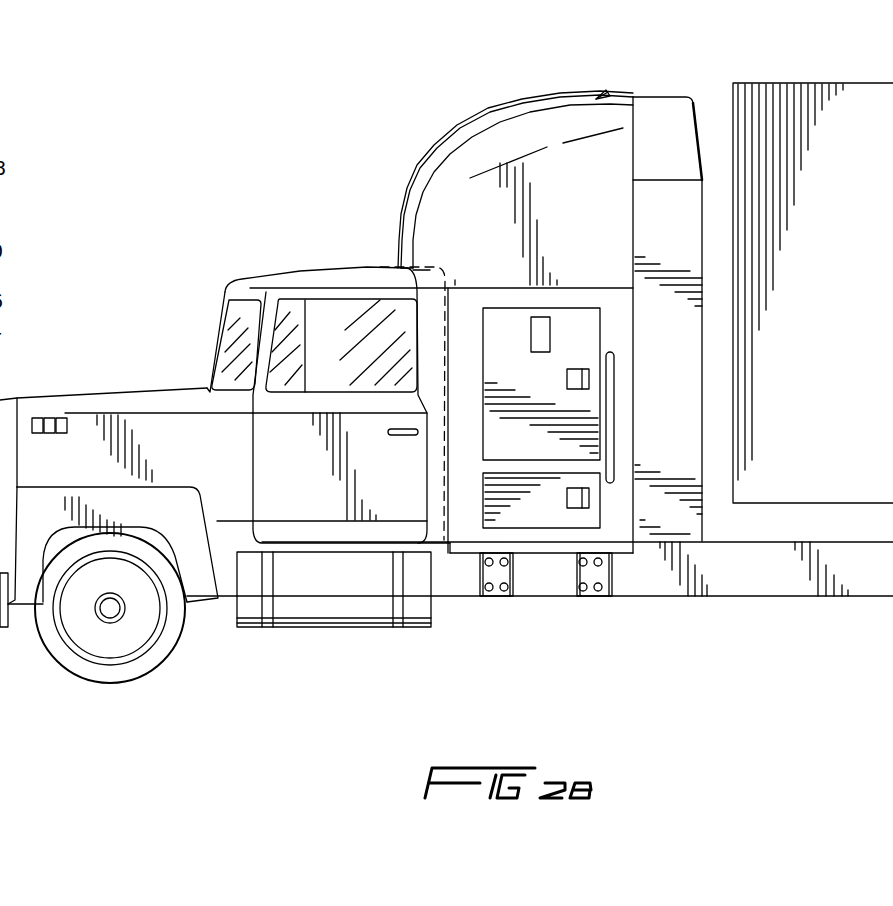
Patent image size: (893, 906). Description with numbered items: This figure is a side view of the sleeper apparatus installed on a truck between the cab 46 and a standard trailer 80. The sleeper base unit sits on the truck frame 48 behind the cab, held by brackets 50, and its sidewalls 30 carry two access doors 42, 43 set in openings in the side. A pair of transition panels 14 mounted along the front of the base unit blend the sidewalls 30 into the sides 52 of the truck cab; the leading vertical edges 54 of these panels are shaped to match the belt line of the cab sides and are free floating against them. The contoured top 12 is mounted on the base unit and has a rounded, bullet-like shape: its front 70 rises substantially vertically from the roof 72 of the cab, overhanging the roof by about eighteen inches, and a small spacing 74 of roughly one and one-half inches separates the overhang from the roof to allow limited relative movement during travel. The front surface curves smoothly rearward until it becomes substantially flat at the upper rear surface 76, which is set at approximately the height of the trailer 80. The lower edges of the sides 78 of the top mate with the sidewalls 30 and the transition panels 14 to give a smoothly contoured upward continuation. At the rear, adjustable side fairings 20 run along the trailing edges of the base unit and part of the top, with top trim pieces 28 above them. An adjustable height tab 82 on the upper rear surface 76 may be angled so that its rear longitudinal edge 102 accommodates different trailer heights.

The contoured top 12 is at (495, 168).
The transition panels 14 is at (437, 438).
The adjustable side fairings 20 is at (684, 526).
The top trim pieces 28 is at (676, 103).
The sidewalls 30 is at (467, 533).
The access door 42 is at (593, 343).
The access door 43 is at (595, 517).
The cab 46 is at (203, 350).
The truck frame 48 is at (720, 587).
The brackets 50 is at (500, 597).
The sides of the truck cab 52 is at (332, 512).
The leading vertical edges 54 is at (427, 488).
The front of the top 70 is at (400, 225).
The roof 72 is at (283, 277).
The spacing 74 is at (401, 267).
The upper rear surface 76 is at (566, 102).
The sides of the top 78 is at (596, 214).
The trailer 80 is at (837, 96).
The adjustable height tab 82 is at (603, 90).
The rear longitudinal edge 102 is at (588, 98).